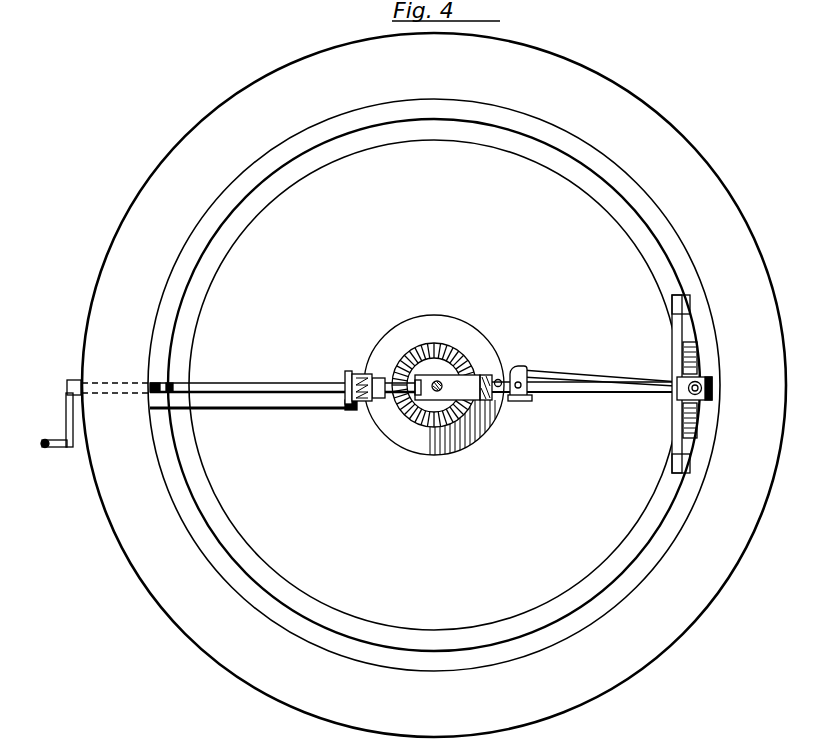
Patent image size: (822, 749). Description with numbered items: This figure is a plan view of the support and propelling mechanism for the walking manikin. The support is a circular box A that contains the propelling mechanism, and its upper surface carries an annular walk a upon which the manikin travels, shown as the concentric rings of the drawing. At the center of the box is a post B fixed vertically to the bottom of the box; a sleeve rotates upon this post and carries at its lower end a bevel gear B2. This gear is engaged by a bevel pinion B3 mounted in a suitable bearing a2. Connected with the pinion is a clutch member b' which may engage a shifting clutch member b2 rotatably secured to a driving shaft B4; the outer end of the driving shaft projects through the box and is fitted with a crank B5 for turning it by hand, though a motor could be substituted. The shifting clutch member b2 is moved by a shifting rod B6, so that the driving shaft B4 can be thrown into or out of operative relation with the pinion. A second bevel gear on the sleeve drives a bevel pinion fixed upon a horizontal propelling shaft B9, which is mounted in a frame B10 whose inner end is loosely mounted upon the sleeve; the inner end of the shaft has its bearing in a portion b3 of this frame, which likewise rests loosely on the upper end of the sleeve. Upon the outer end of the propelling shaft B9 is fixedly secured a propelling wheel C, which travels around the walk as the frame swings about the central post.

The circular box A is at (672, 125).
The annular walk a is at (434, 385).
The bearing a2 is at (396, 402).
The post B is at (441, 383).
The bevel gear B2 is at (420, 418).
The bevel pinion B3 is at (392, 362).
The driving shaft B4 is at (247, 382).
The crank B5 is at (55, 448).
The shifting rod B6 is at (240, 410).
The horizontal propelling shaft B9 is at (533, 398).
The frame B10 is at (567, 397).
The clutch member b' is at (352, 369).
The shifting clutch member b2 is at (343, 378).
The bearing portion of frame b3 is at (476, 385).
The propelling wheel C is at (707, 410).